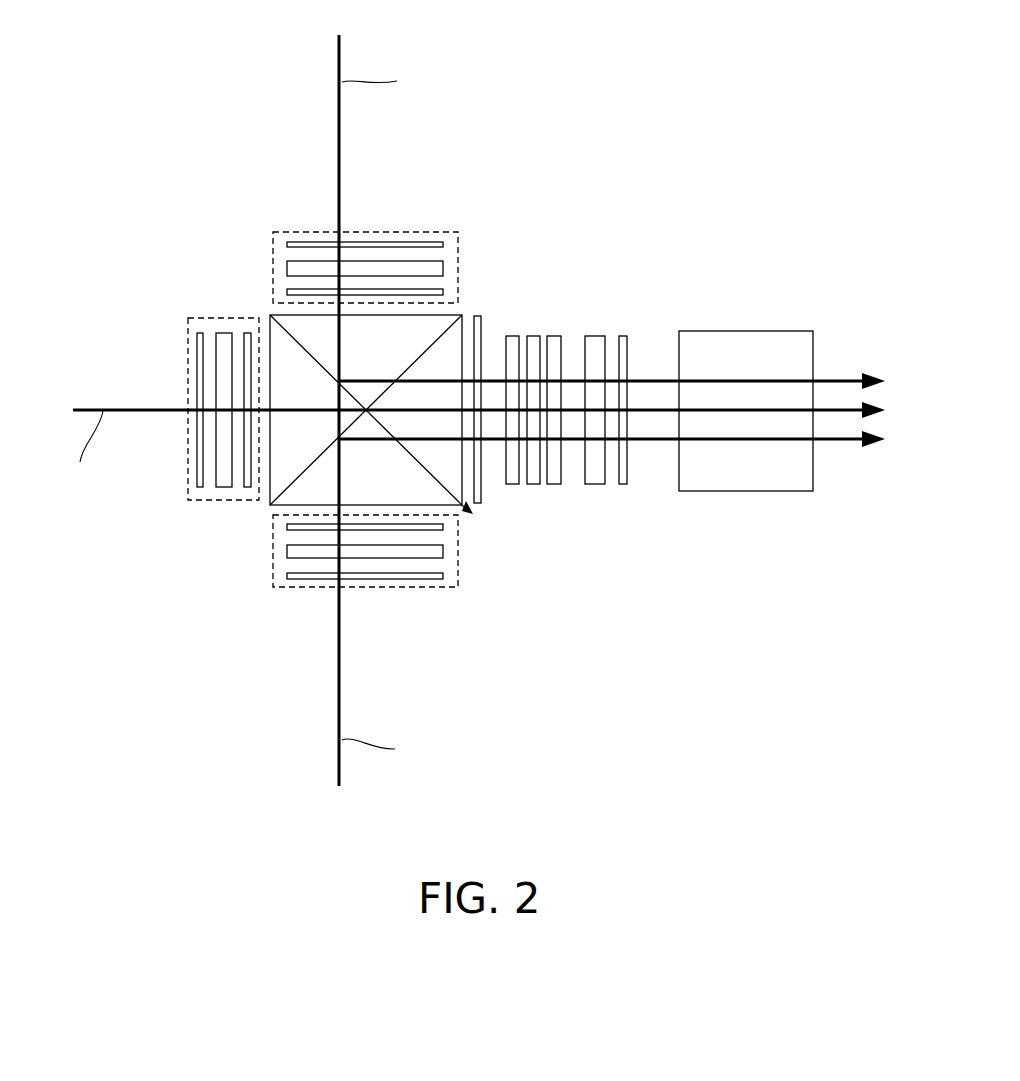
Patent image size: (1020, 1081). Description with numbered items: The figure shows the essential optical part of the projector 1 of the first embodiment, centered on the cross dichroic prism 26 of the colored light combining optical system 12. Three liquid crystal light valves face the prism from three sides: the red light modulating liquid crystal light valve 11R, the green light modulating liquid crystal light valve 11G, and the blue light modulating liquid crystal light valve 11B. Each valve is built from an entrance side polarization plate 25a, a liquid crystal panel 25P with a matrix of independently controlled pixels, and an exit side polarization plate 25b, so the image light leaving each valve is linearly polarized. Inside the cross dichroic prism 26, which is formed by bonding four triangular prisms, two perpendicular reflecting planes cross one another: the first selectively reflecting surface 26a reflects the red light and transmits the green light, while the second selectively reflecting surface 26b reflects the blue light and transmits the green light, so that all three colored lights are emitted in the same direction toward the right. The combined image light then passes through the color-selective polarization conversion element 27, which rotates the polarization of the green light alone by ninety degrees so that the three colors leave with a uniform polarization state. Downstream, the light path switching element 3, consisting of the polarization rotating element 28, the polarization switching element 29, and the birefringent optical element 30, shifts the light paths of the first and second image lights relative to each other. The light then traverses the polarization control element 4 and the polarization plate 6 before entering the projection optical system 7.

The projector 1 is at (644, 86).
The light path switching element 3 is at (585, 276).
The polarization control element 4 is at (595, 336).
The polarization plate 6 is at (624, 336).
The projection optical system 7 is at (744, 331).
The blue light modulating liquid crystal light valve 11B is at (395, 232).
The green light modulating liquid crystal light valve 11G is at (188, 445).
The red light modulating liquid crystal light valve 11R is at (372, 588).
The colored light combining optical system 12 is at (566, 485).
The entrance side polarization plate 25a is at (287, 244).
The liquid crystal panel 25P is at (287, 268).
The exit side polarization plate 25b is at (287, 292).
The cross dichroic prism 26 is at (472, 513).
The first selectively reflecting surface 26a is at (297, 480).
The second selectively reflecting surface 26b is at (293, 338).
The color-selective polarization conversion element 27 is at (481, 487).
The polarization rotating element 28 is at (513, 336).
The polarization switching element 29 is at (533, 336).
The birefringent optical element 30 is at (556, 336).